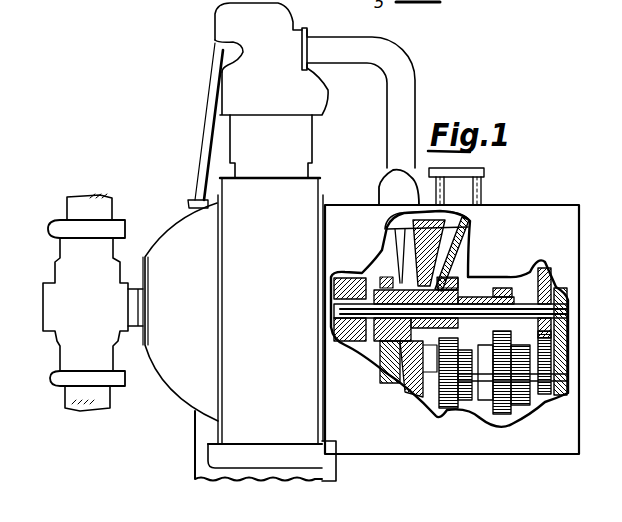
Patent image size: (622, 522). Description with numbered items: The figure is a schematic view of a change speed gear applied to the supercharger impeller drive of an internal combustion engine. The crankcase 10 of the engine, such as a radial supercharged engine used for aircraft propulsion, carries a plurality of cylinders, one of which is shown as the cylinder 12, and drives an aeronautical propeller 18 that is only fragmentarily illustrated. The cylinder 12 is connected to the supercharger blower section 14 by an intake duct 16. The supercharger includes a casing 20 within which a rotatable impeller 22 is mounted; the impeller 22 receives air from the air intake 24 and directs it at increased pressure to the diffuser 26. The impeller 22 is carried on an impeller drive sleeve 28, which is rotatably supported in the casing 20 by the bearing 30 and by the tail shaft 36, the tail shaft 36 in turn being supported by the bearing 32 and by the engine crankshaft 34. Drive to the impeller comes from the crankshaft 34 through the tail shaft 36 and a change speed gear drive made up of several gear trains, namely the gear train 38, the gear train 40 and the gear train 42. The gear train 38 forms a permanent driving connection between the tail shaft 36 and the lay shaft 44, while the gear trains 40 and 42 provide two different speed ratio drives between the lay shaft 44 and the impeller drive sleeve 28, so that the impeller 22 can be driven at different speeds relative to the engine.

The crankcase 10 is at (214, 429).
The cylinder 12 is at (213, 92).
The supercharger blower section 14 is at (393, 188).
The intake duct 16 is at (392, 133).
The aeronautical propeller 18 is at (58, 351).
The casing 20 is at (468, 222).
The impeller 22 is at (380, 368).
The air intake 24 is at (444, 240).
The diffuser 26 is at (400, 218).
The impeller drive sleeve 28 is at (378, 268).
The bearing 30 is at (381, 265).
The bearing 32 is at (562, 292).
The crankshaft 34 is at (356, 340).
The tail shaft 36 is at (568, 312).
The gear train 38 is at (540, 395).
The gear train 40 is at (500, 415).
The gear train 42 is at (445, 410).
The lay shaft 44 is at (573, 376).